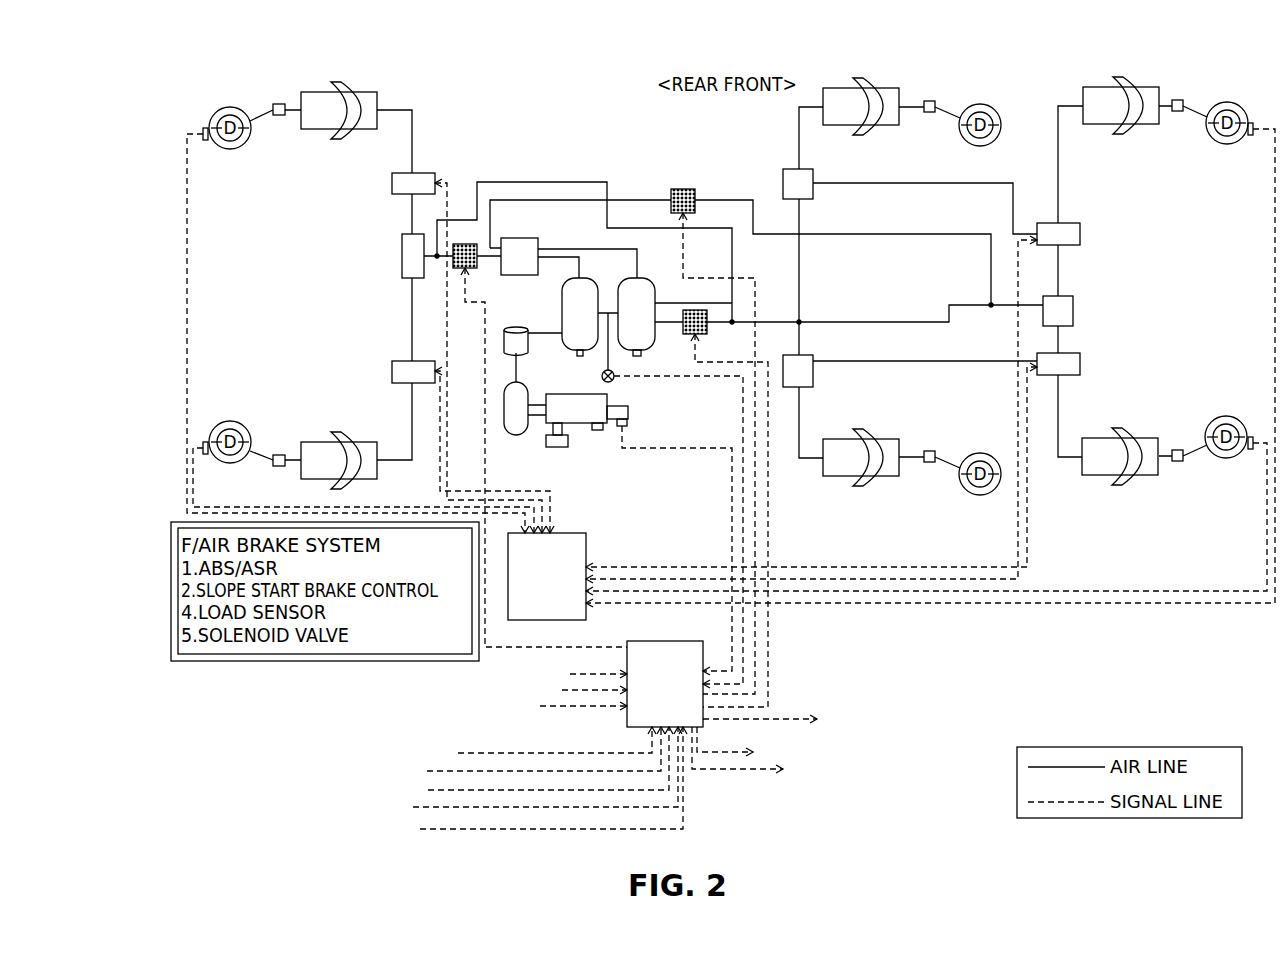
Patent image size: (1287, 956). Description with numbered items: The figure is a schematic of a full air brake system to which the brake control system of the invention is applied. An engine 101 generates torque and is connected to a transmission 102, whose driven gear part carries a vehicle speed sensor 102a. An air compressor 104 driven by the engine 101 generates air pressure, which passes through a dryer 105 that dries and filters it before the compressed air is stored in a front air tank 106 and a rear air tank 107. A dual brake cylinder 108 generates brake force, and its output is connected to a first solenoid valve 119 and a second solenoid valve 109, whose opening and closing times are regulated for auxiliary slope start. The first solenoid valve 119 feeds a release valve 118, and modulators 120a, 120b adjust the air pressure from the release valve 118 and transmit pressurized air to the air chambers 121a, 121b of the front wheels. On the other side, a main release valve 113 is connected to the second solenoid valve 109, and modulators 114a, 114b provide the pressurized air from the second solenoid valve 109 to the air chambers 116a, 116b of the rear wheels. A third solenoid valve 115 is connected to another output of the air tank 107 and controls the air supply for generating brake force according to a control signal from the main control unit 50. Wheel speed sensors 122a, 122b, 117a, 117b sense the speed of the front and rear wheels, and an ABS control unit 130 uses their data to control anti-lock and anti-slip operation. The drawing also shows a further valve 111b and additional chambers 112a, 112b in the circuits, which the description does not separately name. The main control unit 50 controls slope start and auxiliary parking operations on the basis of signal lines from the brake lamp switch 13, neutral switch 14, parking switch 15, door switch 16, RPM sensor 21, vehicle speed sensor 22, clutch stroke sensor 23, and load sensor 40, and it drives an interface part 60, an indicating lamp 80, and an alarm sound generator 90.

The air chamber 121a is at (376, 92).
The air chamber 121b is at (316, 442).
The wheel speed sensor 122a is at (240, 147).
The wheel speed sensor 122b is at (246, 423).
The modulator 120a is at (392, 183).
The modulator 120b is at (392, 367).
The release valve 118 is at (402, 256).
The first solenoid valve 119 is at (466, 244).
The dual brake cylinder 108 is at (505, 275).
The front air tank 106 is at (597, 290).
The rear air tank 107 is at (652, 283).
The dryer 105 is at (522, 353).
The air compressor 104 is at (518, 435).
The engine 101 is at (578, 423).
The transmission 102 is at (628, 412).
The vehicle speed sensor 102a is at (627, 423).
The second solenoid valve 109 is at (686, 189).
The third solenoid valve 115 is at (707, 334).
The modulator 114a is at (813, 195).
The modulator 114b is at (1080, 365).
The front relay valve 111b is at (813, 372).
The main release valve 113 is at (1073, 311).
The front brake chamber 112a is at (899, 88).
The front brake chamber 112b is at (899, 440).
The air chamber 116a is at (1159, 88).
The air chamber 116b is at (1158, 476).
The wheel speed sensor 117a is at (1230, 145).
The wheel speed sensor 117b is at (1228, 416).
The ABS control unit 130 is at (586, 540).
The main control unit 50 is at (640, 641).
The clutch stroke sensor 23 is at (583, 673).
The brake lamp switch 13 is at (578, 690).
The neutral switch 14 is at (569, 706).
The parking switch 15 is at (543, 745).
The load sensor 40 is at (531, 754).
The door switch 16 is at (537, 763).
The vehicle speed sensor 22 is at (532, 772).
The RPM sensor 21 is at (539, 783).
The interface part 60 is at (774, 719).
The alarm sound generator 90 is at (740, 745).
The indicating lamp 80 is at (752, 753).